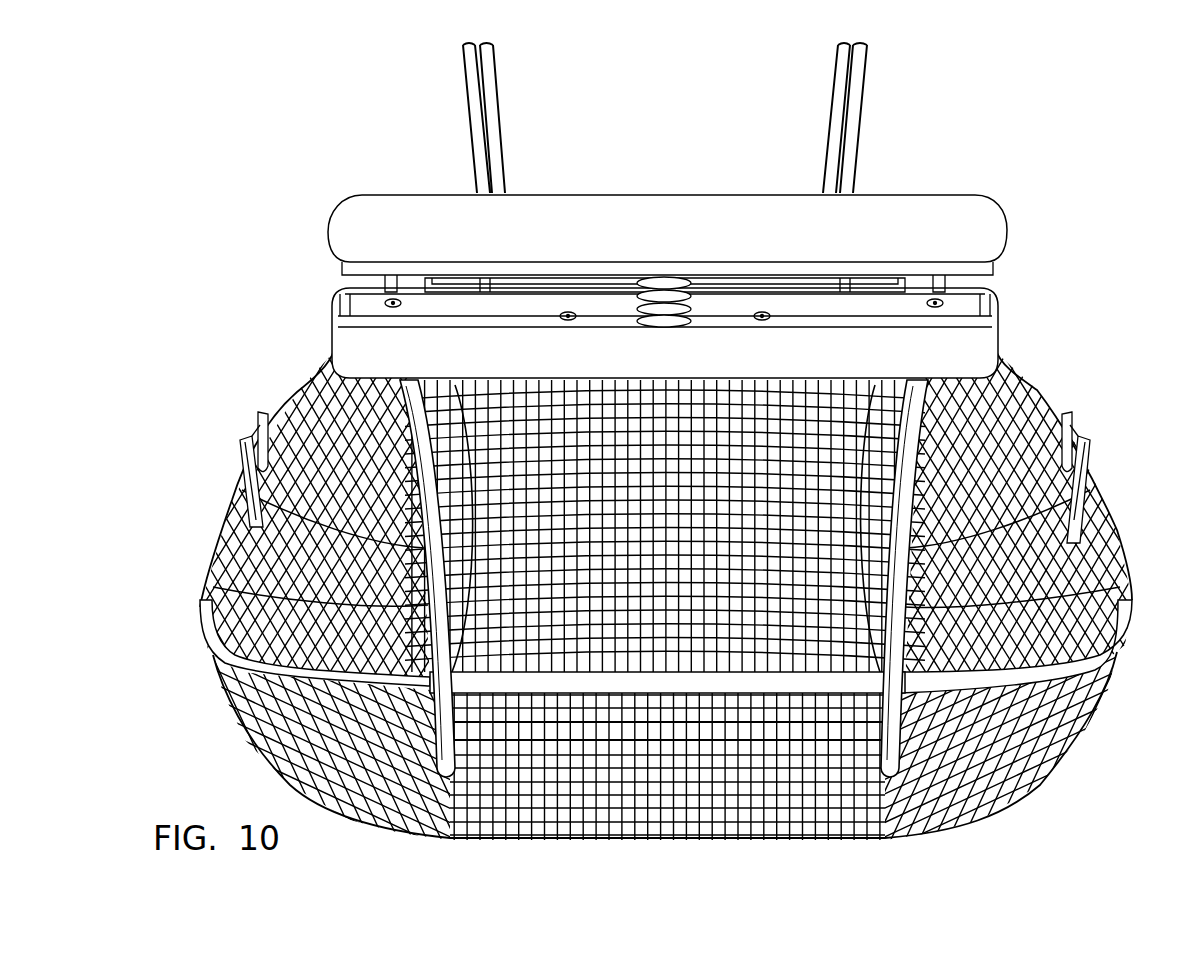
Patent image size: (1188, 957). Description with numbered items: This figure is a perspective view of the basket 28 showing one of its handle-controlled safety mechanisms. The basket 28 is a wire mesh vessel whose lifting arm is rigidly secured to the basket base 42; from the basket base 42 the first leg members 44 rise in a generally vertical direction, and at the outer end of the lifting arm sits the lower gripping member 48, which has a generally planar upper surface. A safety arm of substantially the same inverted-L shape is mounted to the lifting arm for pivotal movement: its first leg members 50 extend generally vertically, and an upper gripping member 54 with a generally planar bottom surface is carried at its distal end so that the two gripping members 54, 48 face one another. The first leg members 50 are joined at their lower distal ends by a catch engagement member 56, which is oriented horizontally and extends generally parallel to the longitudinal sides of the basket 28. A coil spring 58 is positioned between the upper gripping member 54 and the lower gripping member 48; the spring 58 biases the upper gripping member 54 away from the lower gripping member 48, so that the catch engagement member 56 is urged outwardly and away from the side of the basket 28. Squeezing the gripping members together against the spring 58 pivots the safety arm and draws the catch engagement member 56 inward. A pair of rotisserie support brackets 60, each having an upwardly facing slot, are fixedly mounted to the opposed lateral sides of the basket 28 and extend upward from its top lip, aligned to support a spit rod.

The basket 28 is at (1046, 332).
The basket base 42 is at (1037, 770).
The first leg members 44 is at (428, 605).
The lower gripping member 48 is at (335, 330).
The first leg members 50 is at (437, 542).
The upper gripping member 54 is at (335, 240).
The catch engagement member 56 is at (645, 687).
The coil spring 58 is at (697, 290).
The rotisserie support brackets 60 is at (260, 413).